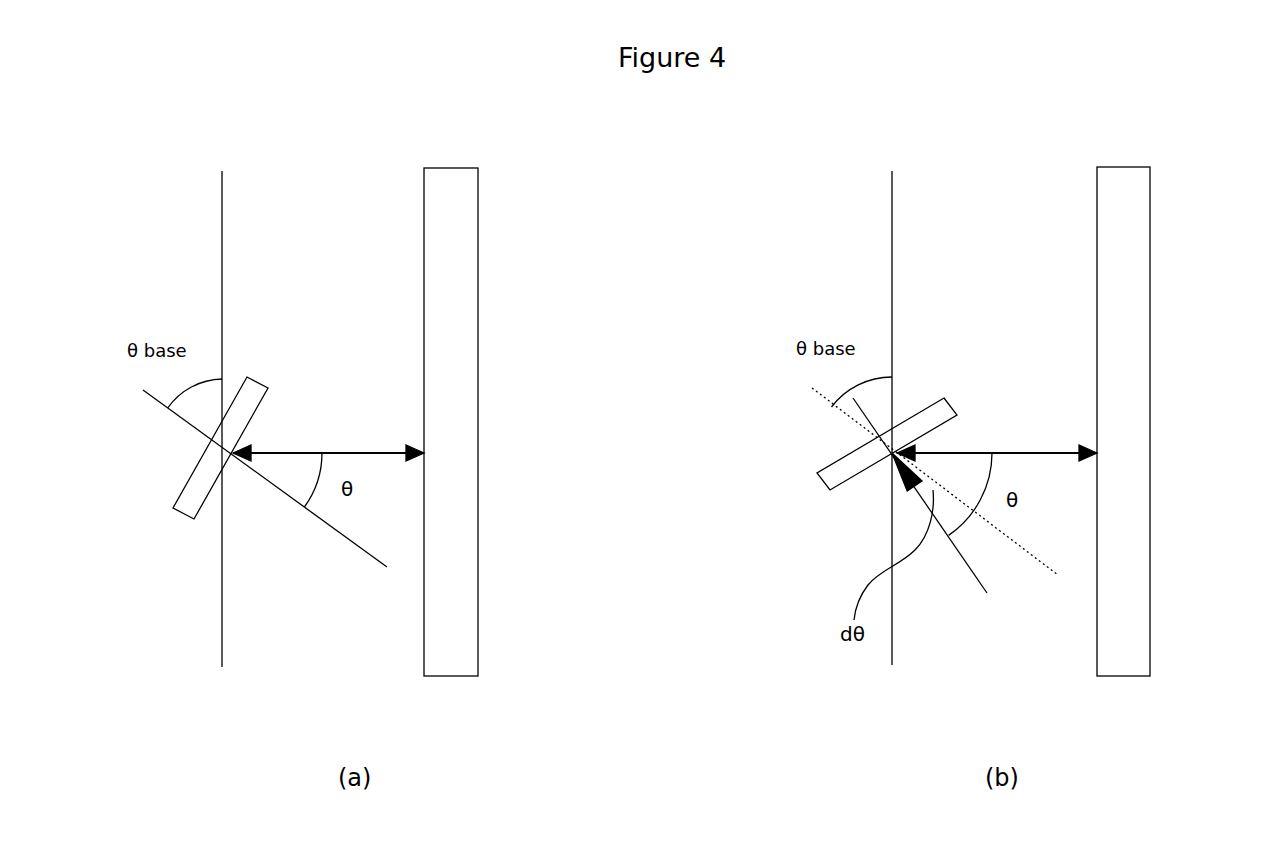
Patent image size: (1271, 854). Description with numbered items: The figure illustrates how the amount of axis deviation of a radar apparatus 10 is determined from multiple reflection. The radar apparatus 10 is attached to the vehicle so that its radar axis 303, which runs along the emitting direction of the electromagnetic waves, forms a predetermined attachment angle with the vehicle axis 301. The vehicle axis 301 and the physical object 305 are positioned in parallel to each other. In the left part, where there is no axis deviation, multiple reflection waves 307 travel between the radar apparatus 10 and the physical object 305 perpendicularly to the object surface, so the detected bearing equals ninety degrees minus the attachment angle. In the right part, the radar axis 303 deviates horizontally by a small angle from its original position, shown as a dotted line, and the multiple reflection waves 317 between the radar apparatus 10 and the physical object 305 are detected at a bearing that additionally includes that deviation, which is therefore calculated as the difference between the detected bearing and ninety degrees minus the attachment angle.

The radar apparatus 10 is at (183, 512).
The vehicle axis 301 is at (222, 267).
The radar axis 303 is at (347, 540).
The physical object 305 is at (478, 292).
The multiple reflection waves 307 is at (357, 453).
The multiple reflection waves 317 is at (1042, 453).